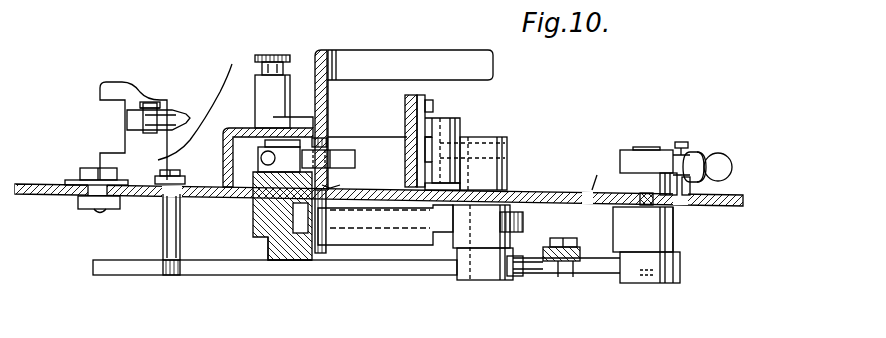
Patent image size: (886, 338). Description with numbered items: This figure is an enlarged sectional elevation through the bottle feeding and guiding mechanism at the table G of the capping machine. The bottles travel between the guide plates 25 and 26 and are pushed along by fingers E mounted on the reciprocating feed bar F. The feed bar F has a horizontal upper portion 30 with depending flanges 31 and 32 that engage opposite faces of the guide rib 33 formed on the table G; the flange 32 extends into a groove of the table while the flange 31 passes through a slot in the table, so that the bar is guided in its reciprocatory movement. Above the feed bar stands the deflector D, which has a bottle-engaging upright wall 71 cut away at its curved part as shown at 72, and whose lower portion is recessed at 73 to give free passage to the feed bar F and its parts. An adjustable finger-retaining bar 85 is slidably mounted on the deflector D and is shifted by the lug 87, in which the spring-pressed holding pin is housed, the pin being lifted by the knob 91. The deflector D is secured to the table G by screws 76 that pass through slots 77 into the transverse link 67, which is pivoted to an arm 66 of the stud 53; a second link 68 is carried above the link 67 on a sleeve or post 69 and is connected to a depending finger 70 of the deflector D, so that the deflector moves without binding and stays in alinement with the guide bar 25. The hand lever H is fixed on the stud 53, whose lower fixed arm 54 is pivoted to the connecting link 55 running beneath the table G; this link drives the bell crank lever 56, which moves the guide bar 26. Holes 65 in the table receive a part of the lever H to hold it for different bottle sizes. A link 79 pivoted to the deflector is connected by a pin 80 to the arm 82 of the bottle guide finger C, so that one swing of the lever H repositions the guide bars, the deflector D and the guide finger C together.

The bottle guide finger C is at (113, 82).
The deflector D is at (346, 49).
The fingers E is at (328, 159).
The feed member or bar F is at (254, 176).
The table G is at (45, 196).
The hand lever H is at (723, 152).
The guide plate 25 is at (332, 192).
The guide plate 26 is at (410, 100).
The horizontal upper portion 30 is at (279, 156).
The depending web or flange 31 is at (256, 213).
The depending web or flange 32 is at (332, 188).
The guide rib or track 33 is at (292, 258).
The stud 53 is at (656, 148).
The fixed arm 54 is at (595, 257).
The connecting link 55 is at (560, 272).
The bell crank lever 56 is at (532, 266).
The holes 65 is at (660, 194).
The arm 66 is at (682, 256).
The transverse link 67 is at (389, 272).
The second link or bar 68 is at (445, 226).
The sleeve or post 69 is at (520, 236).
The depending finger 70 is at (322, 258).
The bottle-engaging upright wall 71 is at (410, 120).
The cut away part 72 is at (346, 76).
The recessed or laterally extended portion 73 is at (227, 136).
The screws 76 is at (165, 238).
The slots 77 is at (88, 198).
The link 79 is at (151, 93).
The pin 80 is at (156, 105).
The arm 82 is at (140, 118).
The adjustable finger-retaining bar 85 is at (326, 141).
The lug or projection 87 is at (284, 101).
The knob or handle 91 is at (258, 54).